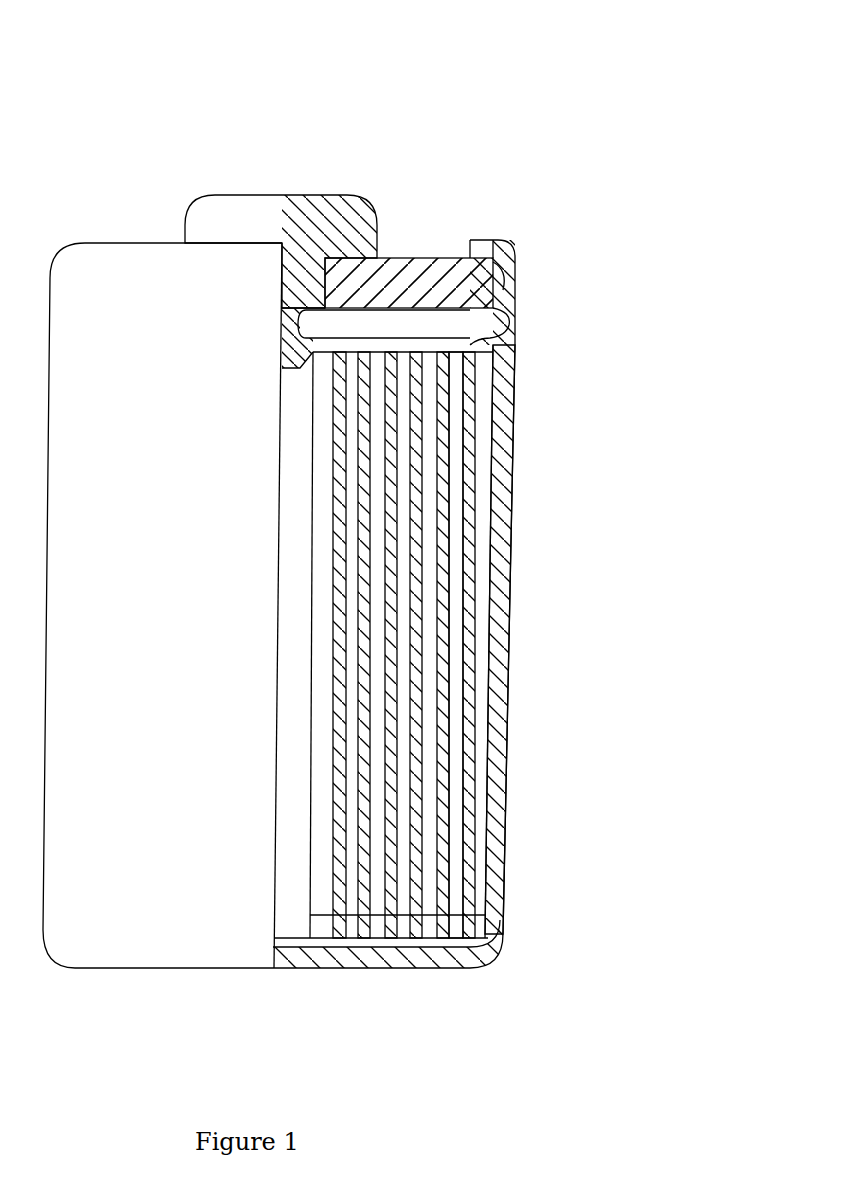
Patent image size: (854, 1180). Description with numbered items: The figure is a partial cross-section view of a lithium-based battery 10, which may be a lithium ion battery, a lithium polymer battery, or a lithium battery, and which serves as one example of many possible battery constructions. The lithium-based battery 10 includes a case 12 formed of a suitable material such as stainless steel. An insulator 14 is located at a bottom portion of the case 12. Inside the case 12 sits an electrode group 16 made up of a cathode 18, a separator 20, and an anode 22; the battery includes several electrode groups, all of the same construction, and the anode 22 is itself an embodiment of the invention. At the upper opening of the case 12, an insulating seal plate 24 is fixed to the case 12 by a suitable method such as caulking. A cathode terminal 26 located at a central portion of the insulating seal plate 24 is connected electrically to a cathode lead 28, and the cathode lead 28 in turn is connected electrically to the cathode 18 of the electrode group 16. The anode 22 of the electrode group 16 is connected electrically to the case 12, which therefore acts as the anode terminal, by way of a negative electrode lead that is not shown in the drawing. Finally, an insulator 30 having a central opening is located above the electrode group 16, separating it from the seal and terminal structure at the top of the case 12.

The lithium-based battery 10 is at (557, 143).
The case 12 is at (594, 833).
The insulator 14 is at (402, 962).
The electrode group 16 is at (478, 542).
The cathode 18 is at (455, 452).
The separator 20 is at (453, 479).
The anode 22 is at (467, 511).
The insulating seal plate 24 is at (428, 257).
The cathode terminal 26 is at (320, 200).
The cathode lead 28 is at (305, 353).
The insulator 30 is at (586, 327).